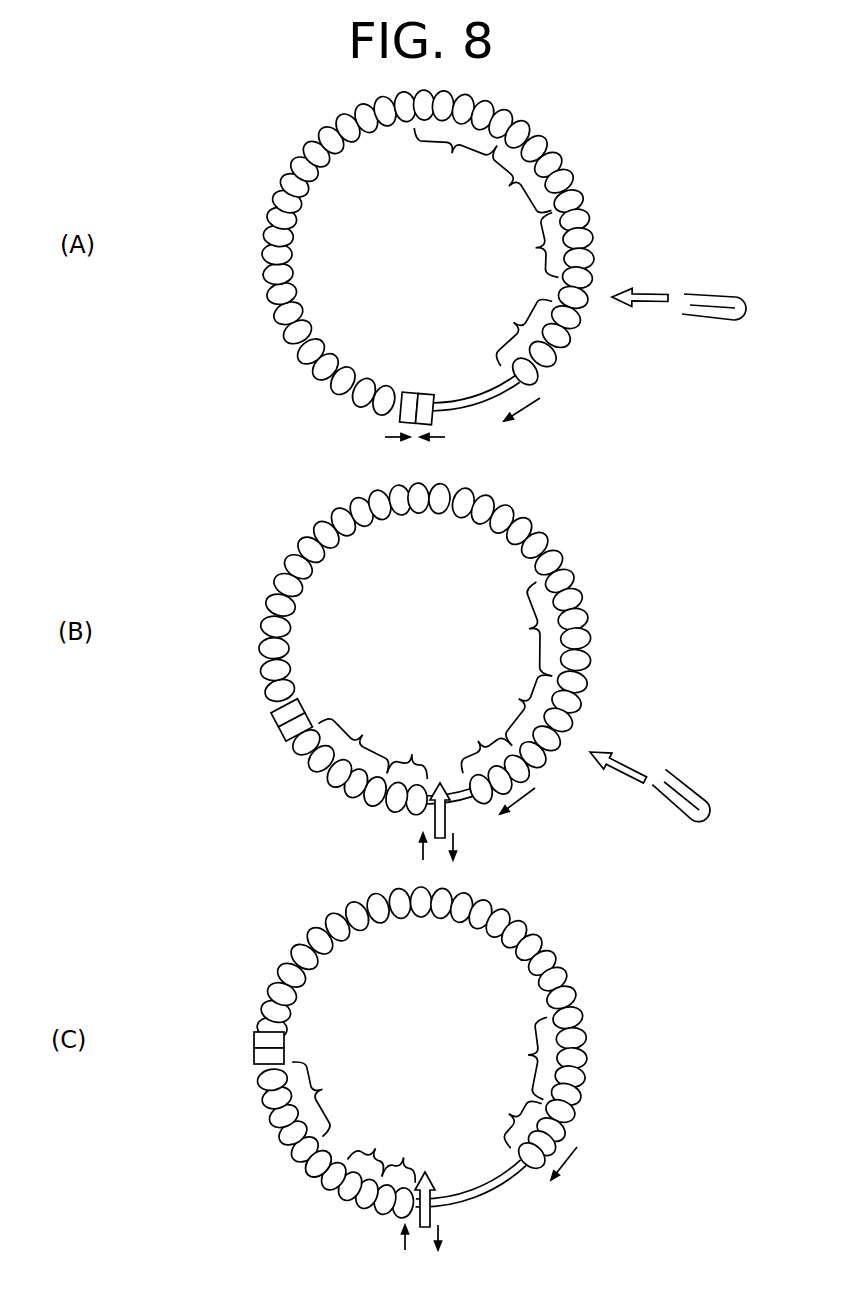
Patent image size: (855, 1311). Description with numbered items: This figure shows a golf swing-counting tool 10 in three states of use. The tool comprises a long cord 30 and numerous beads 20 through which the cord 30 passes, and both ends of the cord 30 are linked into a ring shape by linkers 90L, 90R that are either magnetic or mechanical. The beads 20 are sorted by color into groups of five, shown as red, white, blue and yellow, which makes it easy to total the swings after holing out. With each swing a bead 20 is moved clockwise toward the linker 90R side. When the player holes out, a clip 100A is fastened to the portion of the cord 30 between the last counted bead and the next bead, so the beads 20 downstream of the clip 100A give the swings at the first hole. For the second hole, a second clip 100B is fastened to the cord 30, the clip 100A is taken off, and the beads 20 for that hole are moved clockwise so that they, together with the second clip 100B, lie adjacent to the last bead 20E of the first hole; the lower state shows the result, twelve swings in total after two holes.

The bracelet accessory 10 is at (459, 670).
The beads 20 is at (450, 654).
The last bead 20E is at (322, 1172).
The cord 30 is at (483, 810).
The linker 90L is at (336, 692).
The linker 90R is at (355, 697).
The clip 100A is at (547, 552).
The second clip 100B is at (579, 981).